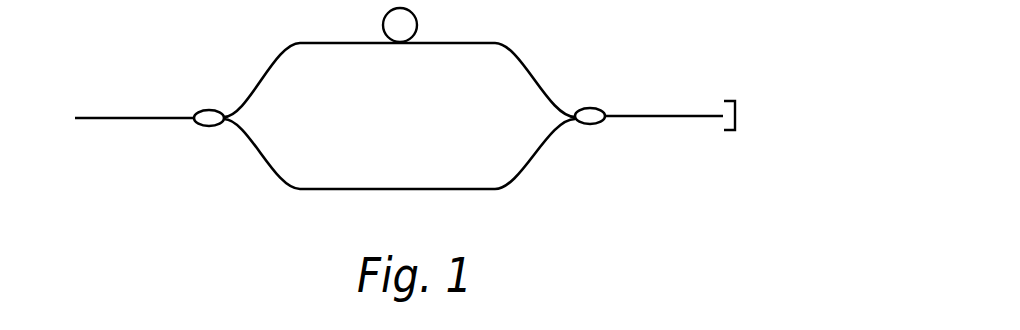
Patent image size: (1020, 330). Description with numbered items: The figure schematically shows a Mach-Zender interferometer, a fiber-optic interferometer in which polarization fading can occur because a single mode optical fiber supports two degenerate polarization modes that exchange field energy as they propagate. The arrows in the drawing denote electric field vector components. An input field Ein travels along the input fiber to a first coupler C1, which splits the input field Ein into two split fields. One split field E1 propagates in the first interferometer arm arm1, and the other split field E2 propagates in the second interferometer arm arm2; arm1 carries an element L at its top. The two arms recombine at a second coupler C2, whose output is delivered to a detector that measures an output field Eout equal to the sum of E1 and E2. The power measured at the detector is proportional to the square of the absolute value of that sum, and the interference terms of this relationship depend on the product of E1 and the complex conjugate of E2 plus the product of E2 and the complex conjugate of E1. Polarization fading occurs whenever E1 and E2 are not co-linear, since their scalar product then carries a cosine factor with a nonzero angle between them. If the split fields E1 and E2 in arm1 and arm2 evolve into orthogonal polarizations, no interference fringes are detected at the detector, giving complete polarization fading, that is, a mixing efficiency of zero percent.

The input field Ein is at (31, 121).
The first coupler C1 is at (209, 101).
The interferometer arm arm1 is at (399, 80).
The interferometer arm arm2 is at (399, 155).
The path length / phase element L is at (400, 25).
The electric field vector component E1 is at (530, 30).
The electric field vector component E2 is at (531, 162).
The second coupler C2 is at (590, 100).
The element detector is at (724, 114).
The output field Eout is at (832, 151).